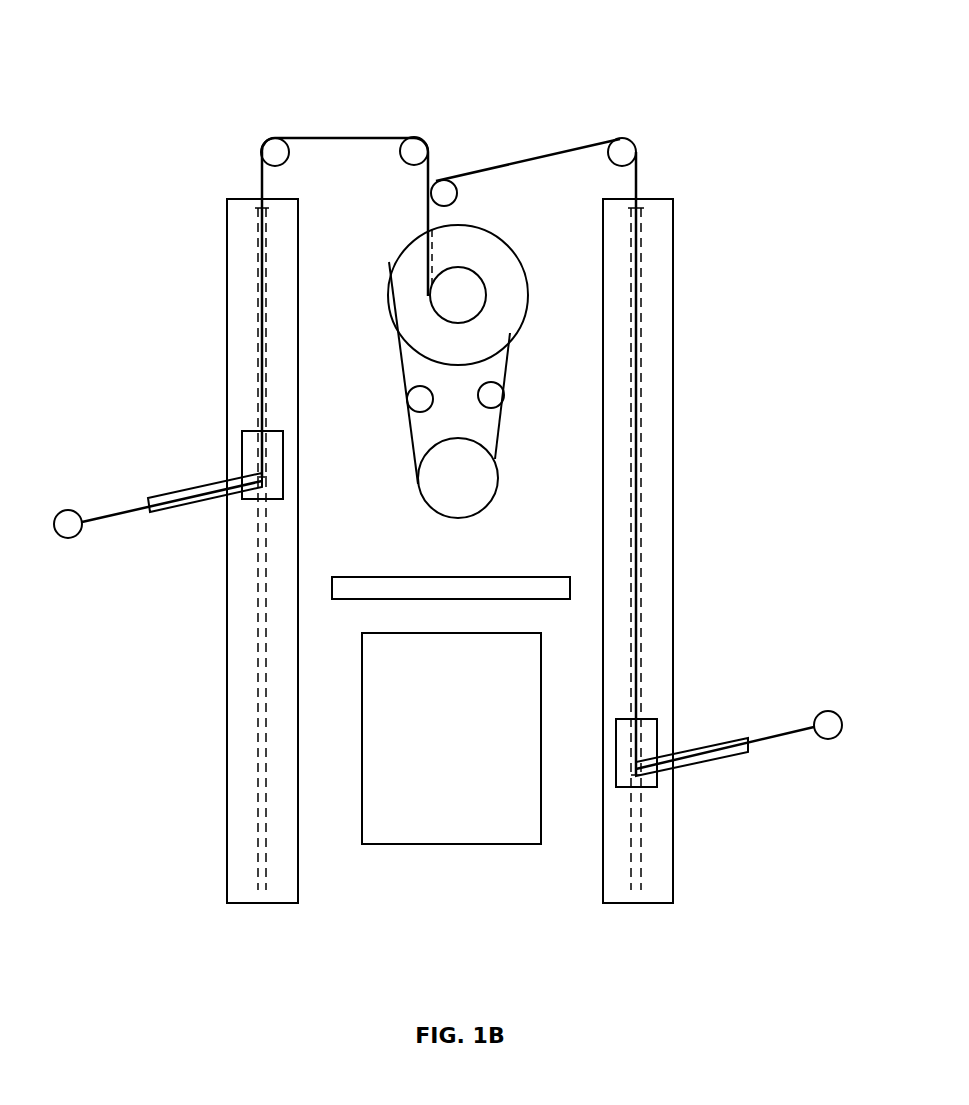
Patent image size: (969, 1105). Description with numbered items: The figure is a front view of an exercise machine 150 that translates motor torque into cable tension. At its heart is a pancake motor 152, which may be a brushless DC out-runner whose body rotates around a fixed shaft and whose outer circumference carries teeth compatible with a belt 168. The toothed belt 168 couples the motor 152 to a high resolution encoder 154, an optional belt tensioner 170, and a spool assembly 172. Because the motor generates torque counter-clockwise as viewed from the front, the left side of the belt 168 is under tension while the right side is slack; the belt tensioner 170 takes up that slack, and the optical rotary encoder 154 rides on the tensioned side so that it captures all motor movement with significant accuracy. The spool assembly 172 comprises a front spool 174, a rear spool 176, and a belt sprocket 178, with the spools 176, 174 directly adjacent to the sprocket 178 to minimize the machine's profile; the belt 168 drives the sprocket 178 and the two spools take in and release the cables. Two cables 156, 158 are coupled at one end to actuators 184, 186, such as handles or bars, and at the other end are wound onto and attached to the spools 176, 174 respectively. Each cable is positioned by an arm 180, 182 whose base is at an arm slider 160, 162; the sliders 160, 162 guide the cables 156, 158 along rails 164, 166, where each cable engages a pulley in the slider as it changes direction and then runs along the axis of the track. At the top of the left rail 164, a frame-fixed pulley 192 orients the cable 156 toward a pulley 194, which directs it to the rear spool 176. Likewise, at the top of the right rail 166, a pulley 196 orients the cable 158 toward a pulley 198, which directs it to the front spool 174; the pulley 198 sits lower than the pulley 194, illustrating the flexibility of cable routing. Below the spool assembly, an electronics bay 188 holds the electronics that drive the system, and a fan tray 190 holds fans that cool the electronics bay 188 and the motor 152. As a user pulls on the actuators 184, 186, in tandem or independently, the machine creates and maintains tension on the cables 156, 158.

The exercise machine 150 is at (168, 66).
The pancake motor 152 is at (480, 487).
The high resolution encoder 154 is at (407, 399).
The cable 156 is at (115, 512).
The cable 158 is at (772, 737).
The slider 160 is at (250, 432).
The slider 162 is at (658, 727).
The rail 164 is at (240, 274).
The rail 166 is at (650, 337).
The belt 168 is at (397, 365).
The belt tensioner 170 is at (504, 395).
The spool assembly 172 is at (414, 230).
The front spool 174 is at (480, 316).
The rear spool 176 is at (480, 294).
The belt sprocket 178 is at (505, 236).
The arm 180 is at (207, 486).
The arm 182 is at (702, 767).
The actuator 184 is at (72, 540).
The actuator 186 is at (826, 742).
The electronics bay 188 is at (420, 633).
The fan tray 190 is at (392, 577).
The pulley 192 is at (262, 150).
The pulley 194 is at (414, 137).
The pulley 196 is at (636, 150).
The pulley 198 is at (443, 180).